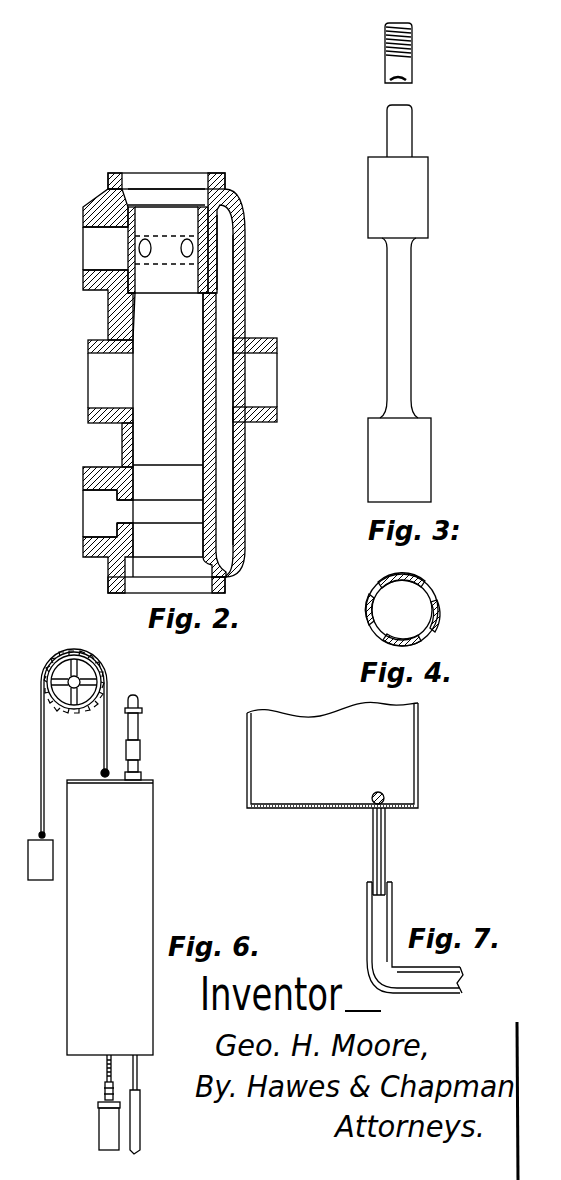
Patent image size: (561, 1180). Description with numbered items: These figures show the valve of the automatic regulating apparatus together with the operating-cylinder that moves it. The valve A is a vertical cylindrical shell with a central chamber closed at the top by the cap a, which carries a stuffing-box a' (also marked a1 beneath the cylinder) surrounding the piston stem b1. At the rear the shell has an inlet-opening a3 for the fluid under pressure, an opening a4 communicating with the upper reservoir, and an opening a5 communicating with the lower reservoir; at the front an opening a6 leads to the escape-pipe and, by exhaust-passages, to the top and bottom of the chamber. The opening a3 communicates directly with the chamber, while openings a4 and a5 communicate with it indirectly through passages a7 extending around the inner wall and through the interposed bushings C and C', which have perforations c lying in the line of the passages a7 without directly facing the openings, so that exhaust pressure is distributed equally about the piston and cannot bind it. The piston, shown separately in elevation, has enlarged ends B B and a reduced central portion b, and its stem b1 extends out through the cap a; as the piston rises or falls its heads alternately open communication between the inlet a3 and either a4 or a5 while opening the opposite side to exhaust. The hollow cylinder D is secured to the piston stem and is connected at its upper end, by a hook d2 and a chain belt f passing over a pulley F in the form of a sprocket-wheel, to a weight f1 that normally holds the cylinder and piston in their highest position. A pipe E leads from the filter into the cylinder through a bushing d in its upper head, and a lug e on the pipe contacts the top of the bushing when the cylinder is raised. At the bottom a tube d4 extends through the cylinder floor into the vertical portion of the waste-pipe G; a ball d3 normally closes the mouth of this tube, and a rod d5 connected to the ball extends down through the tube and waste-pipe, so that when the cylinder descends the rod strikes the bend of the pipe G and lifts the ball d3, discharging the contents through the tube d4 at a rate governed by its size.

In FIG. 2, the valve A is at (176, 383).
In FIG. 6, the valve A is at (96, 1129).
In FIG. 2, the stuffing-box a' is at (224, 380).
In FIG. 2, the inlet-opening a3 is at (97, 381).
In FIG. 2, the opening a4 is at (92, 252).
In FIG. 2, the opening a5 is at (86, 513).
In FIG. 2, the opening a6 is at (266, 380).
In FIG. 2, the passages a7 is at (158, 525).
In FIG. 2, the bushing C' is at (168, 260).
In FIG. 2, the perforations c is at (183, 269).
In FIG. 4, the perforations c is at (419, 632).
In FIG. 4, the bushing C is at (411, 610).
In FIG. 3, the enlarged end of piston B is at (411, 303).
In FIG. 3, the reduced central portion b is at (404, 328).
In FIG. 3, the stem b1 is at (411, 53).
In FIG. 6, the stem b1 is at (103, 1071).
In FIG. 6, the pulley F is at (74, 693).
In FIG. 6, the chain belt f is at (103, 741).
In FIG. 6, the weight f1 is at (40, 868).
In FIG. 6, the hook d2 is at (101, 773).
In FIG. 6, the hollow cylinder D is at (121, 917).
In FIG. 7, the hollow cylinder D is at (332, 755).
In FIG. 6, the pipe E is at (140, 737).
In FIG. 6, the lug e is at (141, 760).
In FIG. 6, the bushing d is at (143, 772).
In FIG. 6, the stuffing-box a1 is at (103, 1088).
In FIG. 6, the cap a is at (98, 1105).
In FIG. 6, the tube d4 is at (139, 1075).
In FIG. 7, the tube d4 is at (388, 831).
In FIG. 7, the ball d3 is at (385, 790).
In FIG. 7, the wire or rod d5 is at (375, 963).
In FIG. 6, the waste-pipe G is at (142, 1122).
In FIG. 7, the waste-pipe G is at (394, 890).